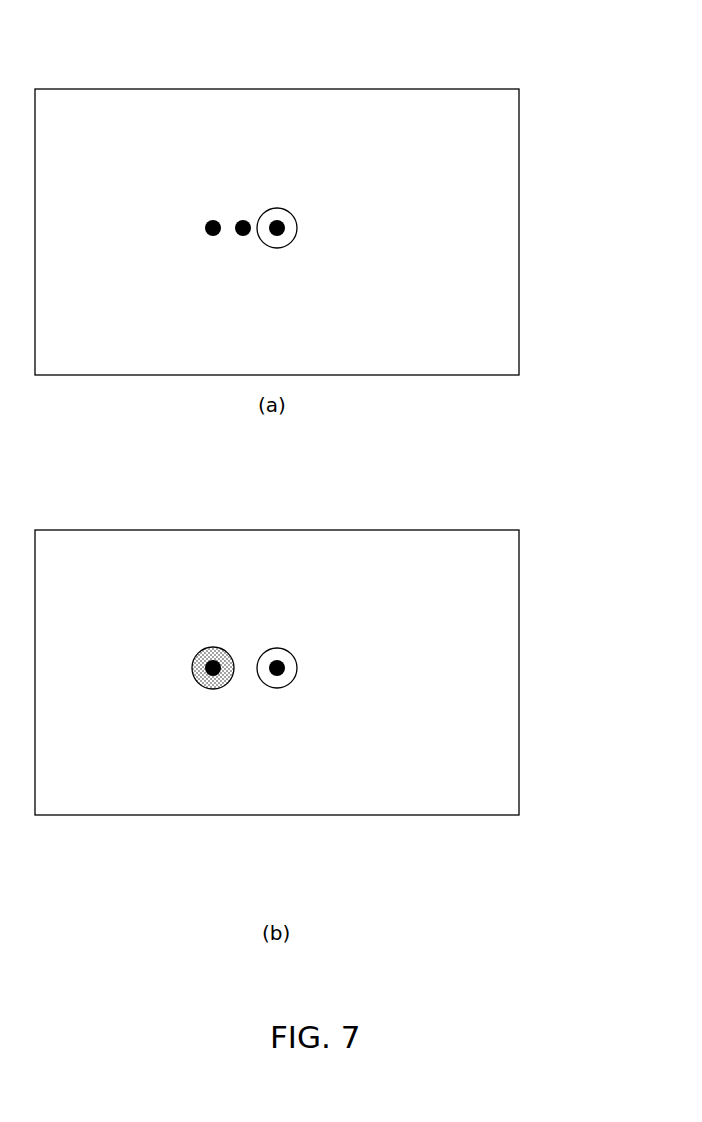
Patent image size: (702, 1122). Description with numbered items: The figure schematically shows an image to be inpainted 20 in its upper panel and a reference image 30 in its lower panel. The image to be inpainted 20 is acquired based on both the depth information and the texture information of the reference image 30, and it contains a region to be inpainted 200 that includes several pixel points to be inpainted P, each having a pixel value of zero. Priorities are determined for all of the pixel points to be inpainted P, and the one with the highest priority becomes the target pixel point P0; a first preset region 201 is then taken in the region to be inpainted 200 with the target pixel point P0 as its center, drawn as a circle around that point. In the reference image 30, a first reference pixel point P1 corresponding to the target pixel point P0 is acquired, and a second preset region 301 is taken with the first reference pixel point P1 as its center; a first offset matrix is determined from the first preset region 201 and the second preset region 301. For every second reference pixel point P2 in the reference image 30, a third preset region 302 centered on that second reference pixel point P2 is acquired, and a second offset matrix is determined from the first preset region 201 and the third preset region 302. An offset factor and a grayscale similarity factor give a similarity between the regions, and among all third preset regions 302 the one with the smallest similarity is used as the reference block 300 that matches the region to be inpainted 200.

The image to be inpainted 20 is at (70, 43).
The region to be inpainted 200 is at (289, 129).
The pixel point to be inpainted P is at (210, 221).
The target pixel point P0 is at (280, 222).
The first preset region 201 is at (297, 226).
The reference image 30 is at (70, 486).
The first reference pixel point P1 is at (282, 657).
The second reference pixel point P2 is at (208, 647).
The reference block 300 is at (243, 770).
The second preset region 301 is at (297, 670).
The third preset region 302 is at (208, 688).